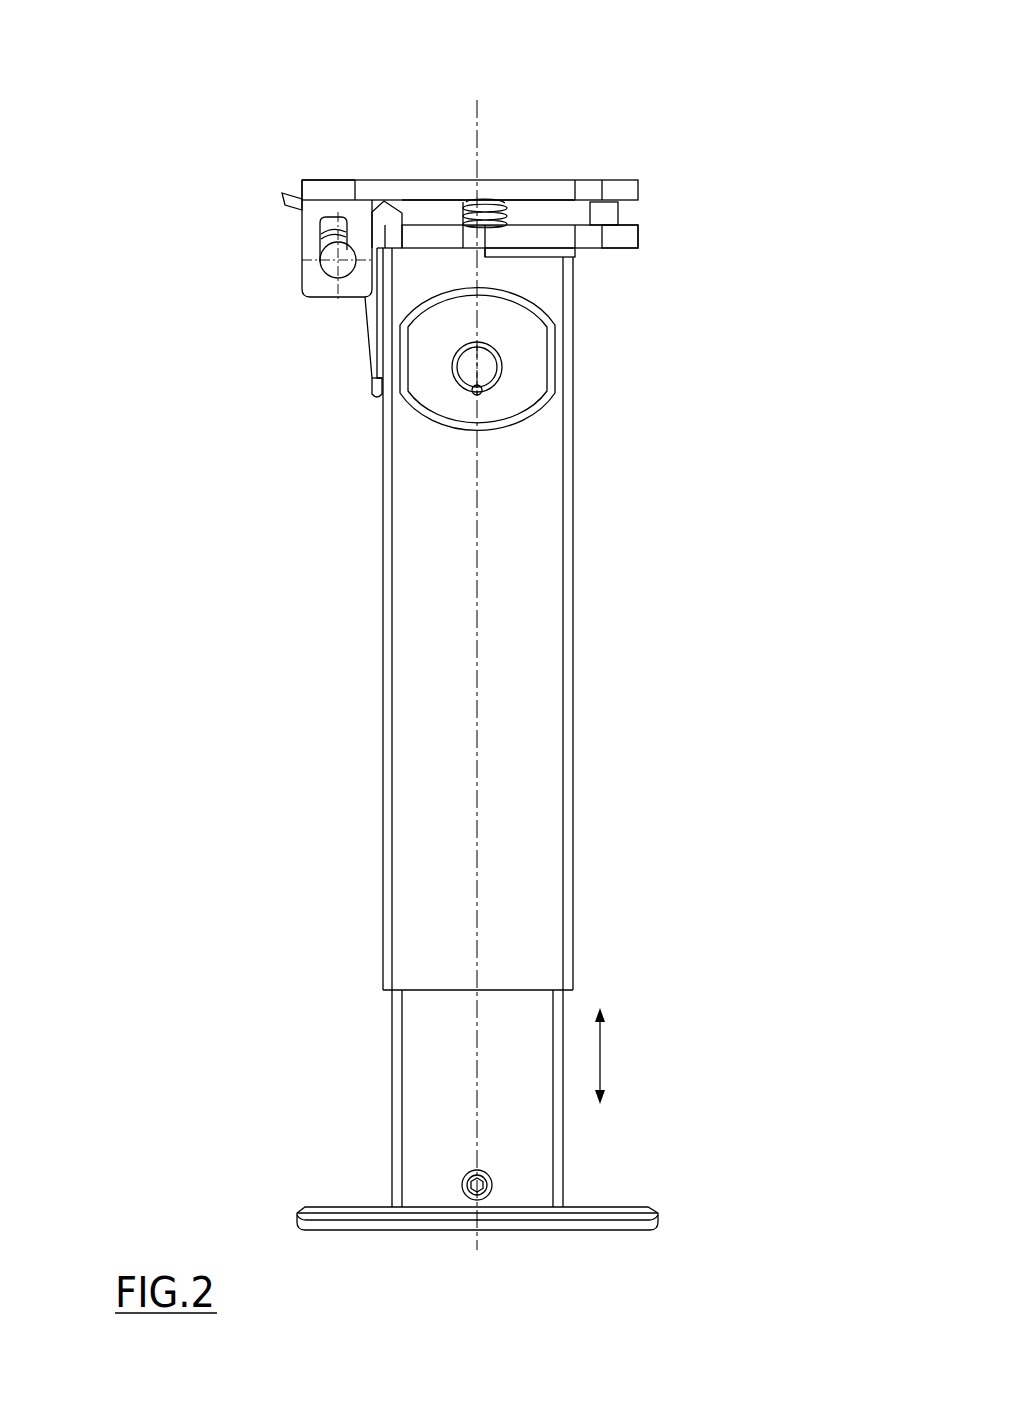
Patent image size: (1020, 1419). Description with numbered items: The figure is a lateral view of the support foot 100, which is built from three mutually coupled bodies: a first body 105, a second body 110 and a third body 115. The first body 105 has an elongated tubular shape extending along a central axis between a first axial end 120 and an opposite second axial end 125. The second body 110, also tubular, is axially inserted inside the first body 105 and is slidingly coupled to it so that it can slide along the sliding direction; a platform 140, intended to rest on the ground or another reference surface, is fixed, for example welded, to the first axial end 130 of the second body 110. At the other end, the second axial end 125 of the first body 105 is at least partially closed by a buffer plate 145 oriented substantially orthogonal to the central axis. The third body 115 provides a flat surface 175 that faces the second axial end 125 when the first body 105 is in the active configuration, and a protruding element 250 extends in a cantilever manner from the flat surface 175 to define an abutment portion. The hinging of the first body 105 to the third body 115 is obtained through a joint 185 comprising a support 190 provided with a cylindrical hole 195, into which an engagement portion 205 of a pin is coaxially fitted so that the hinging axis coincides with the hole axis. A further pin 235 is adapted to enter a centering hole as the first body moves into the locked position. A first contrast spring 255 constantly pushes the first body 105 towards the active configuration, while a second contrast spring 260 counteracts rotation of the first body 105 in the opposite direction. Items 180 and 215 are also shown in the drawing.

The support foot 100 is at (287, 152).
The first body 105 is at (575, 843).
The second body 110 is at (520, 1100).
The third body 115 is at (563, 187).
The first axial end 120 is at (412, 998).
The second axial end 125 is at (580, 216).
The first axial end 130 is at (553, 1240).
The platform 140 is at (375, 1232).
The buffer plate 145 is at (616, 242).
The flat surface 175 is at (534, 190).
The top mounting plate 180 is at (405, 170).
The joint 185 is at (287, 308).
The support 190 is at (307, 277).
The cylindrical hole 195 is at (497, 365).
The engagement portion 205 is at (338, 262).
The slot 215 is at (310, 242).
The pin 235 is at (618, 214).
The protruding element 250 is at (440, 232).
The first contrast spring 255 is at (365, 365).
The second contrast spring 260 is at (488, 207).